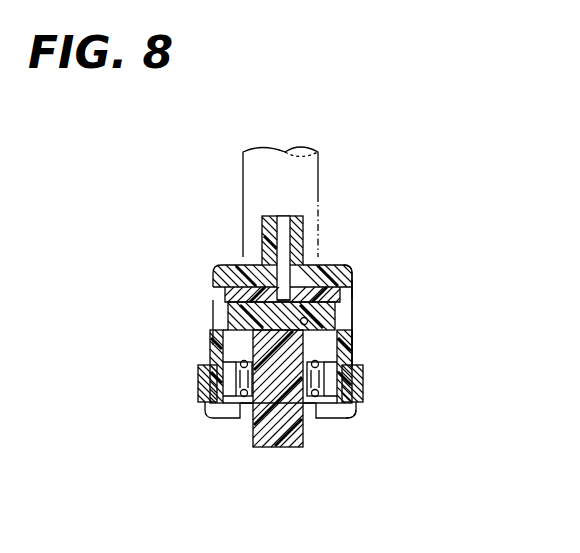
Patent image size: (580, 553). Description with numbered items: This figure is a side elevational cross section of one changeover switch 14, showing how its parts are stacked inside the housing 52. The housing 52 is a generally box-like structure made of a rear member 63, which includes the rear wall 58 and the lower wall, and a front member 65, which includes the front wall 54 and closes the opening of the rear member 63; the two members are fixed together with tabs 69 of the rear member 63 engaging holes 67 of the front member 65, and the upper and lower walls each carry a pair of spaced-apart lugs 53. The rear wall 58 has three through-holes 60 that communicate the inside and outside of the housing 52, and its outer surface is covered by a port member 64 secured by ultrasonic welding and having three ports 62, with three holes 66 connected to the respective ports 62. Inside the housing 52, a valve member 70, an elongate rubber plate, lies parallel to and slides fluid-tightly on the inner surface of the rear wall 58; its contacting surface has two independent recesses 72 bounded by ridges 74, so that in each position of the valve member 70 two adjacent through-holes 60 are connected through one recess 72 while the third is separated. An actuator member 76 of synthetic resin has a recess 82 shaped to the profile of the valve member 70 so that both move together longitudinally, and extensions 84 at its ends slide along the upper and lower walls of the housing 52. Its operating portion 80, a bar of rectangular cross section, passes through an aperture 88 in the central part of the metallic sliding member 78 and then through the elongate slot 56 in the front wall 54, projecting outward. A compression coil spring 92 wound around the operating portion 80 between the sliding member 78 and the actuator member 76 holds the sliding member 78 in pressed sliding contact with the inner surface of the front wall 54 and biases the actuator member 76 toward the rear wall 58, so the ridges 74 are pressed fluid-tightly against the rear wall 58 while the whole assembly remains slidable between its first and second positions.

The changeover switch 14 is at (412, 230).
The housing 52 is at (391, 322).
The lug 53 is at (199, 375).
The front wall 54 is at (318, 416).
The elongate slot 56 is at (252, 418).
The rear wall 58 is at (318, 275).
The through-hole 60 is at (262, 264).
The port 62 is at (267, 225).
The rear member 63 is at (358, 287).
The port member 64 is at (323, 256).
The front member 65 is at (355, 433).
The hole 66 is at (296, 152).
The hole 67 is at (218, 410).
The tab 69 is at (213, 382).
The valve member 70 is at (230, 315).
The recess 72 is at (243, 277).
The ridge 74 is at (262, 292).
The actuator member 76 is at (212, 328).
The sliding member 78 is at (313, 408).
The operating portion 80 is at (266, 440).
The recess 82 is at (308, 320).
The extension 84 is at (222, 342).
The aperture 88 is at (294, 404).
The compression coil spring 92 is at (232, 414).